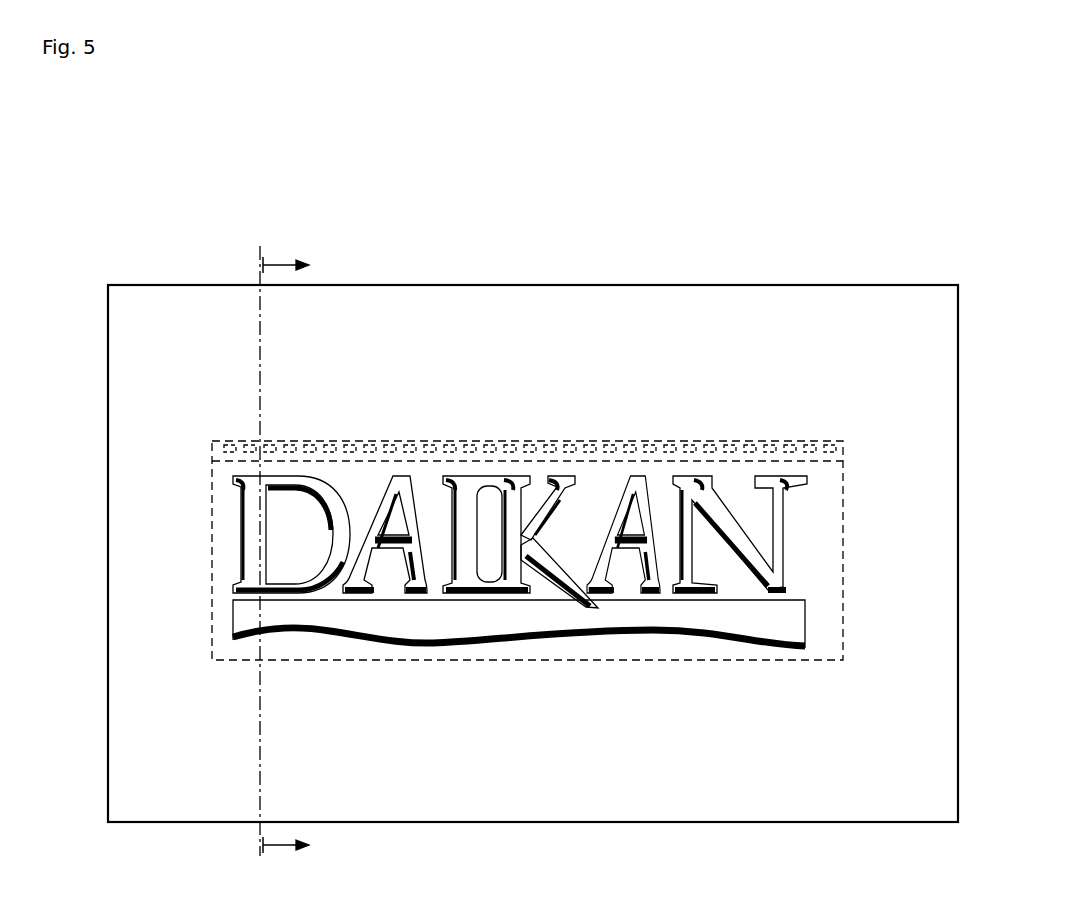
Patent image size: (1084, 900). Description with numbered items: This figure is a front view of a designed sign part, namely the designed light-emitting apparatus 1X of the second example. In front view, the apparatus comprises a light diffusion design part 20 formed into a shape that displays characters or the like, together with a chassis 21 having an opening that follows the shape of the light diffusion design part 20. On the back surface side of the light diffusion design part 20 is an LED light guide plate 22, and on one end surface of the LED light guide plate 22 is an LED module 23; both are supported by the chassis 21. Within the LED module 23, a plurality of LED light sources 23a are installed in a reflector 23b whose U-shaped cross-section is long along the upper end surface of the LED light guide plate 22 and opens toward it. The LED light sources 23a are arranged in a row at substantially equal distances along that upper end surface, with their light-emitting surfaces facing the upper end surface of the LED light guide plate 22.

The designed light-emitting apparatus 1X is at (732, 268).
The light diffusion design part 20 is at (250, 618).
The chassis 21 is at (126, 431).
The LED light guide plate 22 is at (815, 545).
The LED module 23 is at (880, 315).
The LED light sources 23a is at (800, 441).
The reflector 23b is at (783, 441).